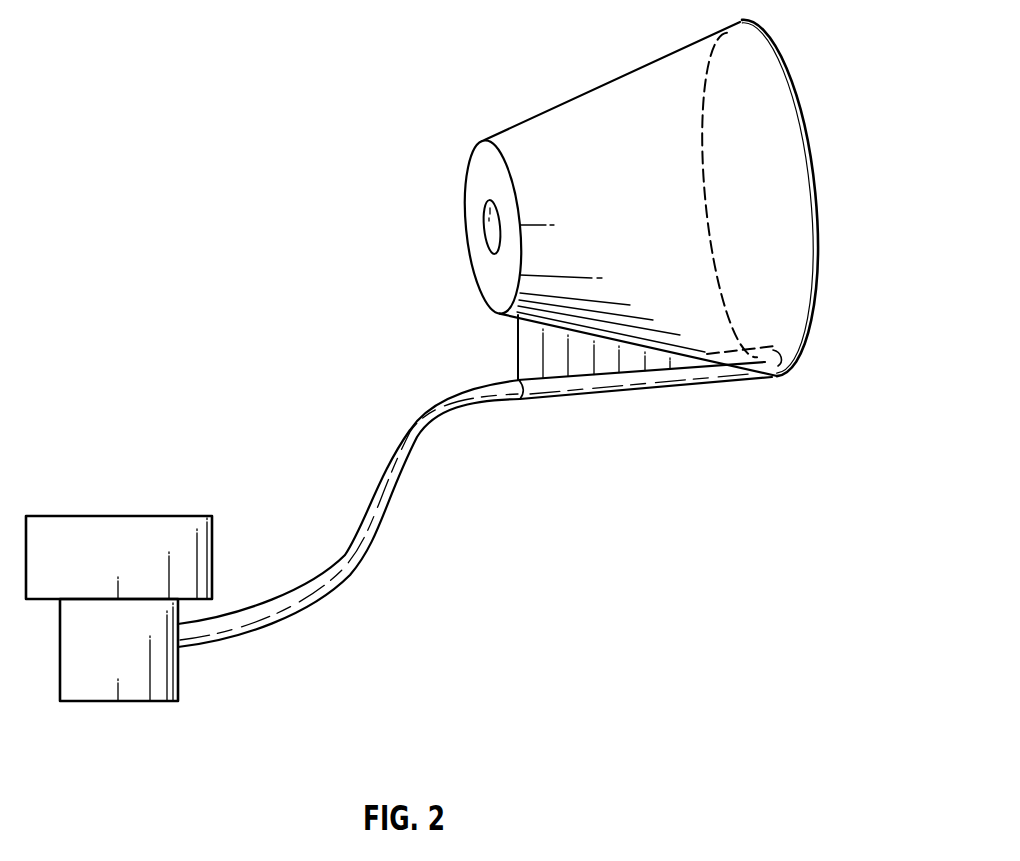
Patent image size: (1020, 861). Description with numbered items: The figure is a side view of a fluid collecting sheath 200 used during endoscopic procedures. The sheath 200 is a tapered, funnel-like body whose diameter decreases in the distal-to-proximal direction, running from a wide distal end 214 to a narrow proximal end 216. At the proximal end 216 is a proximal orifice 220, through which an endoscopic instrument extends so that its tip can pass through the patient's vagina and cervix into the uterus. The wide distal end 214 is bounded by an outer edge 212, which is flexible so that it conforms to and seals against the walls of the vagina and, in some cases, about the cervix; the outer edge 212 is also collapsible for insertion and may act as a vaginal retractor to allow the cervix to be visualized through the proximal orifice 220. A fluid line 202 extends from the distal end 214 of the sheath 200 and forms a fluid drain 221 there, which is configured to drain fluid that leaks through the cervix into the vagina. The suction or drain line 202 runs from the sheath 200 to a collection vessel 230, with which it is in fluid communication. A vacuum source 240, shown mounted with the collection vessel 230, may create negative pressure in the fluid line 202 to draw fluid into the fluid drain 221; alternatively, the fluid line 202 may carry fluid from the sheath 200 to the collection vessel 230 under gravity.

The fluid collecting sheath 200 is at (150, 262).
The fluid line 202 is at (377, 530).
The outer edge 212 is at (777, 42).
The distal end 214 is at (812, 175).
The proximal end 216 is at (492, 277).
The proximal orifice 220 is at (486, 228).
The fluid drain 221 is at (780, 365).
The collection vessel 230 is at (128, 702).
The vacuum source 240 is at (118, 516).